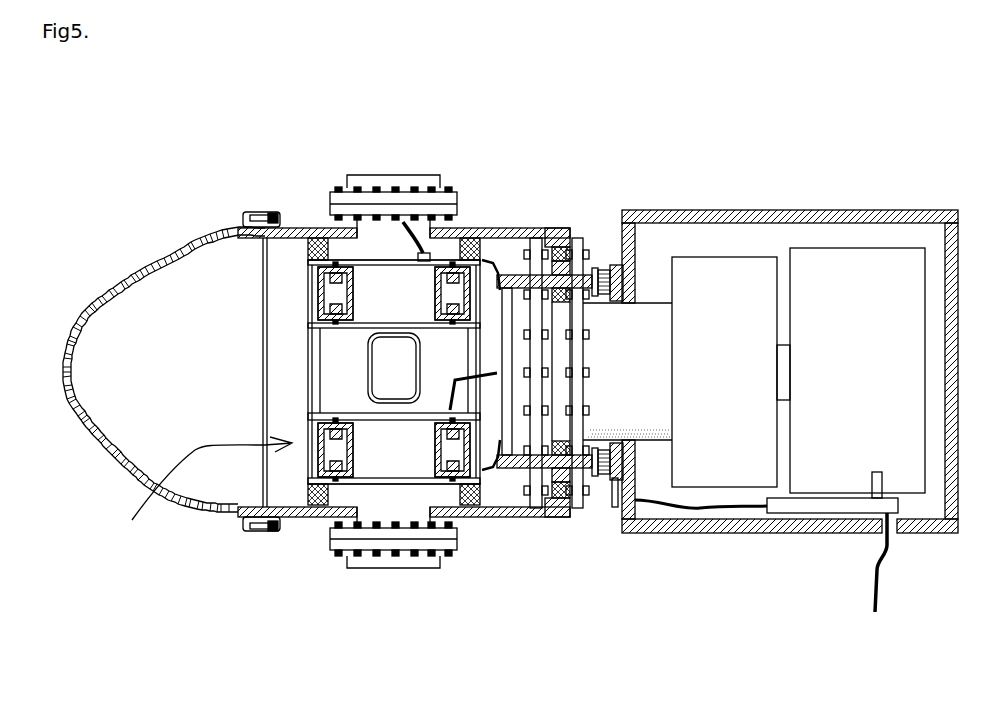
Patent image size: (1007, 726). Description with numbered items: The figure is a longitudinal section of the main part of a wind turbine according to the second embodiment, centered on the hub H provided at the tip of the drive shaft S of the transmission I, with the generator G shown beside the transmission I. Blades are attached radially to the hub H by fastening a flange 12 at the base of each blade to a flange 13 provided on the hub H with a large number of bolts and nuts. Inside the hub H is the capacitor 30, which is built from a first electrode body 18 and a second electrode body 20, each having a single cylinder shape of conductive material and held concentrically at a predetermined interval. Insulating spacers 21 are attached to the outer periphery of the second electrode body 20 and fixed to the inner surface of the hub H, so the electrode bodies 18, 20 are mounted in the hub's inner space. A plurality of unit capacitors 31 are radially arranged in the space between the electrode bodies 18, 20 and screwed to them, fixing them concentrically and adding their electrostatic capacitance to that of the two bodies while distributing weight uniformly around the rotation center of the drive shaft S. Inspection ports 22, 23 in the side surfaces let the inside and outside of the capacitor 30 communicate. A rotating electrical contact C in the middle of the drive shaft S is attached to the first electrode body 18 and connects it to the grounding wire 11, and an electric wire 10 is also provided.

The electric wire 10 is at (420, 217).
The grounding wire 11 is at (873, 580).
The flange 12 is at (330, 214).
The flange 13 is at (328, 214).
The first electrode body 18 is at (378, 420).
The second electrode body 20 is at (378, 262).
The spacer 21 is at (315, 513).
The inspection port 22 is at (365, 360).
The inspection port 23 is at (370, 400).
The capacitor 30 is at (177, 384).
The unit capacitor 31 is at (323, 286).
The drive shaft S is at (662, 322).
The transmission I is at (747, 283).
The generator G is at (888, 285).
The hub H is at (537, 518).
The rotating electrical contact C is at (607, 480).